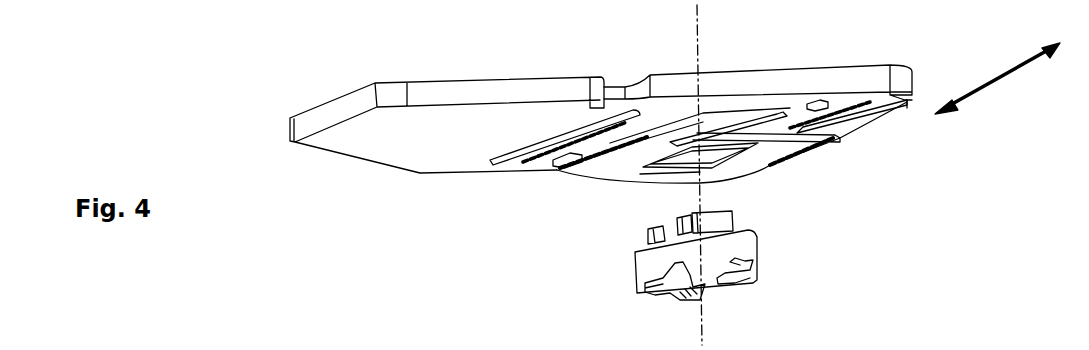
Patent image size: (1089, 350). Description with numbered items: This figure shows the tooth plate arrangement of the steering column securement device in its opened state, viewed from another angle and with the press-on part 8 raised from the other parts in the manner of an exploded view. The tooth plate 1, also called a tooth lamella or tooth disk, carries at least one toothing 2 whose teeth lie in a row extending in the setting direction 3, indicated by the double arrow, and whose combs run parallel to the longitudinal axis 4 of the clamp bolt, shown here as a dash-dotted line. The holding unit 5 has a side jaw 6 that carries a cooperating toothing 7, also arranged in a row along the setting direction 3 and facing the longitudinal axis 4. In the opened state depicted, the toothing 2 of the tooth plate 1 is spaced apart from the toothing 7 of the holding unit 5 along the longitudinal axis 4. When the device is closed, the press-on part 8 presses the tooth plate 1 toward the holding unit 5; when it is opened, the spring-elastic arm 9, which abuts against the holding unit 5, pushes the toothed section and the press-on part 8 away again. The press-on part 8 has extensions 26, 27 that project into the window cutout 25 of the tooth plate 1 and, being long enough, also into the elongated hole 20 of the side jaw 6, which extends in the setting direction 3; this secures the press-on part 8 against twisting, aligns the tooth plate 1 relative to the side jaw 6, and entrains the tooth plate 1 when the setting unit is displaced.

The tooth plate 1 is at (777, 148).
The toothing 2 is at (598, 150).
The setting direction 3 is at (980, 90).
The longitudinal axis 4 is at (700, 333).
The holding unit 5 is at (470, 70).
The side jaw 6 is at (732, 82).
The toothing 7 is at (535, 163).
The press-on part 8 is at (777, 278).
The spring-elastic arm 9 is at (785, 115).
The elongated hole 20 is at (717, 117).
The window cutout 25 is at (657, 175).
The extension 26 is at (720, 218).
The extension 27 is at (653, 240).